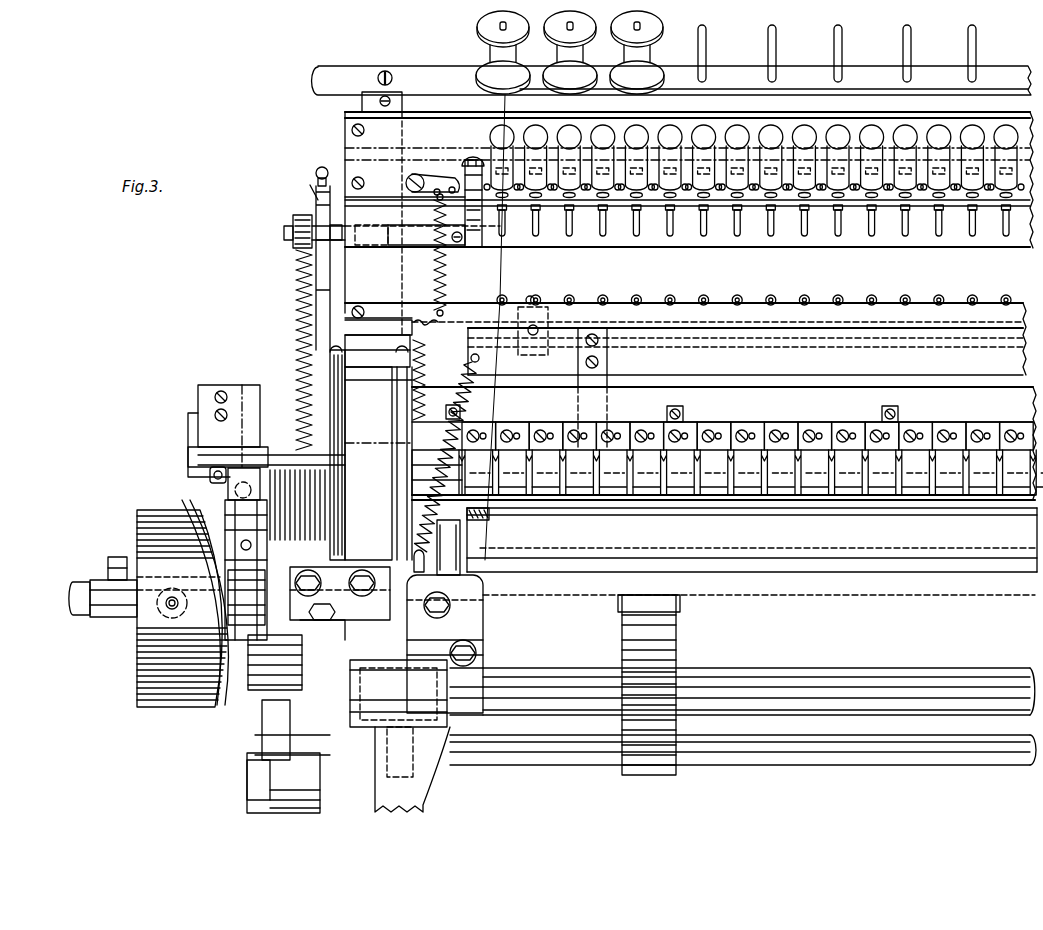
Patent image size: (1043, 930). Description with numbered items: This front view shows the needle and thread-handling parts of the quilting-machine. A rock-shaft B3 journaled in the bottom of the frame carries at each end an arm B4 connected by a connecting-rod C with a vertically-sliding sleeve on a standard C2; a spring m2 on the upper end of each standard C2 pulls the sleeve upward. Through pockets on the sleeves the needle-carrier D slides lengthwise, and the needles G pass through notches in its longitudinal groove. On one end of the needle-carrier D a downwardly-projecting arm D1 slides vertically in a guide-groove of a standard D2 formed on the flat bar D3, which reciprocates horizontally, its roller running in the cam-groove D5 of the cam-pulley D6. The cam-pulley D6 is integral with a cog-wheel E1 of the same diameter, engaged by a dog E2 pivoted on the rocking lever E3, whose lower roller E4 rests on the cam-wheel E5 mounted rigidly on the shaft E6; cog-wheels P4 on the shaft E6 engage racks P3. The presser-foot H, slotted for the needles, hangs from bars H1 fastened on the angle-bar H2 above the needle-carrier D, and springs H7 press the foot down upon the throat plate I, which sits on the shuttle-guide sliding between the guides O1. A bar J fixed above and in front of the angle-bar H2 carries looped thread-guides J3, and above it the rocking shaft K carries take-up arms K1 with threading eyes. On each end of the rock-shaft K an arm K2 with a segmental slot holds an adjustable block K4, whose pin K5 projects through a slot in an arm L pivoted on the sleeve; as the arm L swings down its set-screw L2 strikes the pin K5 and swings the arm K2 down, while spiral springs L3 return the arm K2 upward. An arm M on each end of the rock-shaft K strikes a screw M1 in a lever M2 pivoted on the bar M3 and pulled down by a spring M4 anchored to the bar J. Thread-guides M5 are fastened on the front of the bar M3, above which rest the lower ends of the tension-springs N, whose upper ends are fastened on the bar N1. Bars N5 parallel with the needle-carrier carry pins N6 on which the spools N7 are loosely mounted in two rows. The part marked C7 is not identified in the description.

The pins N6 is at (490, 14).
The bars N5 is at (671, 89).
The spools N7 is at (536, 74).
The bar N1 is at (754, 161).
The tension-springs N is at (702, 165).
The screw M1 is at (474, 157).
The bar M3 is at (405, 185).
The lever M2 is at (432, 184).
The thread-guides M5 is at (532, 200).
The springs M4 is at (425, 255).
The arm M is at (474, 247).
The rocking shaft K is at (687, 237).
The take-up arms K1 is at (758, 232).
The arm K2 is at (298, 181).
The block K4 is at (308, 225).
The pin K5 is at (338, 222).
The set-screw L2 is at (318, 166).
The arm L is at (327, 268).
The spiral springs L3 is at (293, 350).
The thread-guides J3 is at (754, 291).
The bar J is at (685, 339).
The angle-bar H2 is at (745, 351).
The springs H7 is at (607, 362).
The bars H1 is at (470, 360).
The spring m2 is at (445, 405).
The standards C2 is at (370, 351).
The slide block C7 is at (371, 455).
The needle-carrier D is at (617, 442).
The needles G is at (727, 461).
The guides O1 is at (752, 540).
The bed or throat plate I is at (486, 518).
The presser-foot H is at (657, 529).
The shaft E6 is at (742, 684).
The rock-shaft B3 is at (572, 758).
The cog-wheels P4 is at (660, 685).
The racks P3 is at (649, 603).
The cam-wheel E5 is at (350, 684).
The standard D2 is at (214, 449).
The downwardly-projecting arm D1 is at (217, 461).
The dog E2 is at (235, 483).
The cog-wheel E1 is at (246, 570).
The rocking lever E3 is at (246, 597).
The roller E4 is at (275, 662).
The cam-pulley D6 is at (182, 608).
The cam-groove D5 is at (188, 498).
The flat bar D3 is at (120, 560).
The connecting-rods C is at (262, 735).
The arm B4 is at (283, 783).